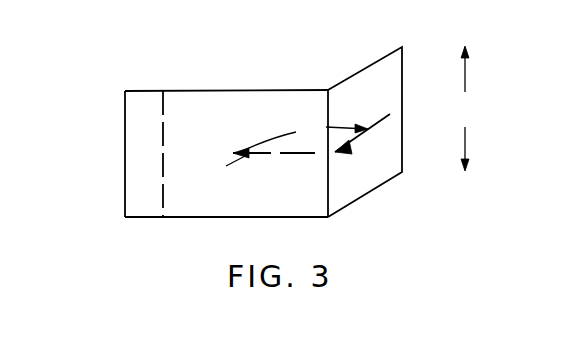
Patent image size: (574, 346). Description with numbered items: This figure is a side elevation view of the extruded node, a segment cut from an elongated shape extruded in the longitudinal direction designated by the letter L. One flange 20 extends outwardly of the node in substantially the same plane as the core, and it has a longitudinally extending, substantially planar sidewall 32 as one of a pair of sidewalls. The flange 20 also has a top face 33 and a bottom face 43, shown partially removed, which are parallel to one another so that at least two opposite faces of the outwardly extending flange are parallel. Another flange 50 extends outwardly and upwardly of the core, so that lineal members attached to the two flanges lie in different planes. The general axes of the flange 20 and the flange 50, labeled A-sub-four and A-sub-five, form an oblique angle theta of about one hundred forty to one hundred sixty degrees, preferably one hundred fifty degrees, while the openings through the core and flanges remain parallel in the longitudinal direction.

The flange 20 is at (265, 144).
The sidewall 32 is at (131, 179).
The top face 33 is at (140, 218).
The bottom face 43 is at (150, 91).
The flange 50 is at (403, 47).